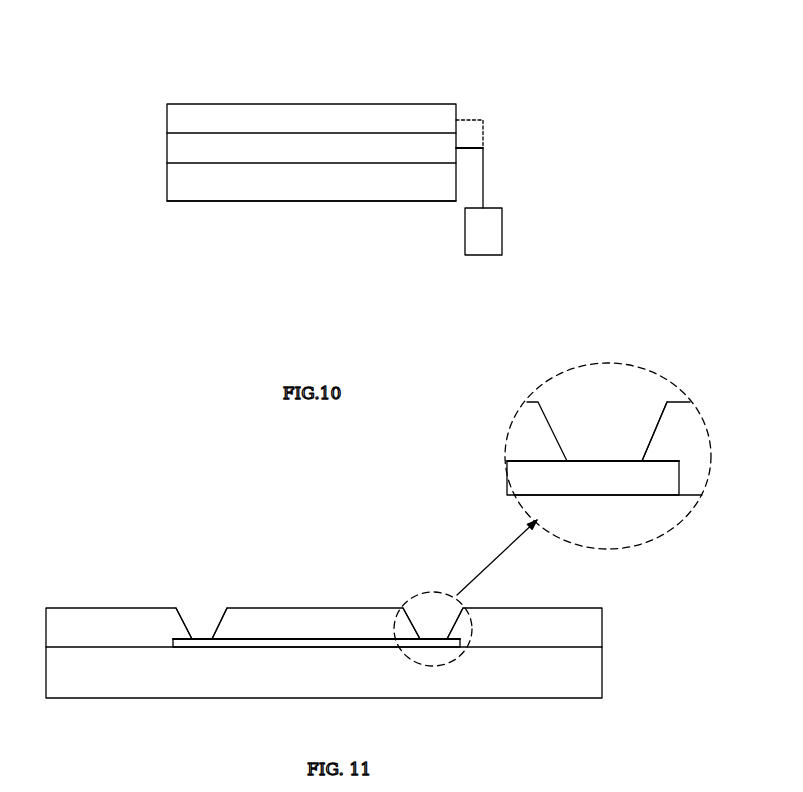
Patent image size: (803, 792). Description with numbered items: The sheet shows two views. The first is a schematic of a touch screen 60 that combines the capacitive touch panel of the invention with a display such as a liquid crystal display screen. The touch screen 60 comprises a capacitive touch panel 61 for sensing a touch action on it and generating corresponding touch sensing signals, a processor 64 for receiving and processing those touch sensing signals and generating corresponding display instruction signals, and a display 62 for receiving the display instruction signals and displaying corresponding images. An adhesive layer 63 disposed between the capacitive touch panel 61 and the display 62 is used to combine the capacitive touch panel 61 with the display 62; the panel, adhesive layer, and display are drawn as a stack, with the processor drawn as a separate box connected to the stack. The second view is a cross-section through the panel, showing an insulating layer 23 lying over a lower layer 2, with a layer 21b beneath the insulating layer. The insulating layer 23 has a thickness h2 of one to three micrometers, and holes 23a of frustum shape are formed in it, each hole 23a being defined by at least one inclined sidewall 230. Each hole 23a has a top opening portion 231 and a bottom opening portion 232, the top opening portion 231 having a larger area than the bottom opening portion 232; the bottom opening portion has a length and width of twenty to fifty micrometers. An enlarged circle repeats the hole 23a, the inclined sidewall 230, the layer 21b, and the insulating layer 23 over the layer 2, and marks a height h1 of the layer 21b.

In FIG. 10, the touch screen 60 is at (148, 100).
In FIG. 10, the capacitive touch panel 61 is at (445, 113).
In FIG. 10, the display 62 is at (360, 199).
In FIG. 10, the adhesive layer 63 is at (445, 147).
In FIG. 10, the processor 64 is at (490, 245).
In FIG. 11, the substrate 2 is at (597, 685).
In FIG. 11, the insulating layer 23 is at (598, 624).
In FIG. 11, the hole 23a is at (433, 618).
In FIG. 11, the electrode pad 21b is at (338, 646).
In FIG. 11, the inclined sidewall 230 is at (652, 430).
In FIG. 11, the top opening portion 231 is at (194, 606).
In FIG. 11, the bottom opening portion 232 is at (201, 637).
In FIG. 11, the height h1 is at (545, 463).
In FIG. 11, the thickness of insulating layer h2 is at (543, 610).